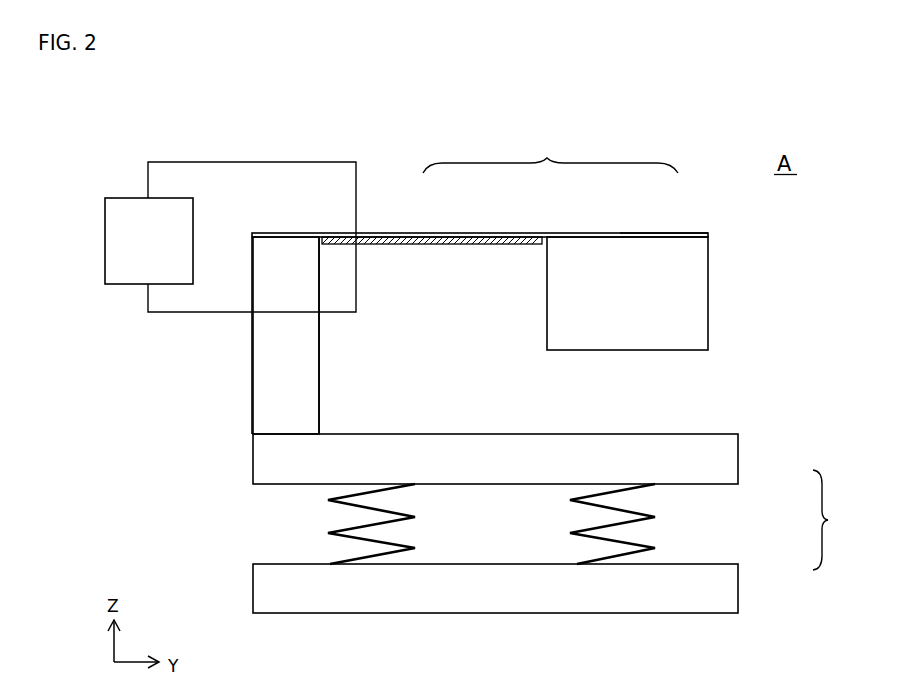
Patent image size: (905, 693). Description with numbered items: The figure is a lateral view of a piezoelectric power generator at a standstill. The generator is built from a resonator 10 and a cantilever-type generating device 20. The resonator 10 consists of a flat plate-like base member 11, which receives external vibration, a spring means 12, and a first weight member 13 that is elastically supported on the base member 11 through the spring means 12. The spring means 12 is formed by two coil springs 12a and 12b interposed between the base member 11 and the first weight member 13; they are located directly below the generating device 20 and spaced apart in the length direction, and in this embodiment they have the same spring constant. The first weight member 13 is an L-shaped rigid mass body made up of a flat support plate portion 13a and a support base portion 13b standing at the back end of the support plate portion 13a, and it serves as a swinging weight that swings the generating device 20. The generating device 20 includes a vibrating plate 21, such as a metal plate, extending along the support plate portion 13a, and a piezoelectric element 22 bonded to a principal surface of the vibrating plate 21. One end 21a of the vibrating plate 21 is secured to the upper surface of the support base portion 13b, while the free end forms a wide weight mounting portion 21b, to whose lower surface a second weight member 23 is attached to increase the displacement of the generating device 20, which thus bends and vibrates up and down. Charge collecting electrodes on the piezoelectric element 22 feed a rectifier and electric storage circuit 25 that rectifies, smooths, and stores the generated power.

The resonator 10 is at (835, 520).
The base member 11 is at (725, 587).
The spring means 12 is at (560, 524).
The coil spring 12a is at (400, 543).
The coil spring 12b is at (572, 498).
The first weight member 13 is at (530, 363).
The support plate portion 13a is at (497, 448).
The support base portion 13b is at (300, 363).
The generating device 20 is at (550, 152).
The vibrating plate 21 is at (458, 231).
The one end 21a is at (273, 234).
The weight mounting portion 21b is at (627, 231).
The piezoelectric element 22 is at (477, 245).
The second weight member 23 is at (578, 252).
The rectifier and electric storage circuit 25 is at (130, 202).